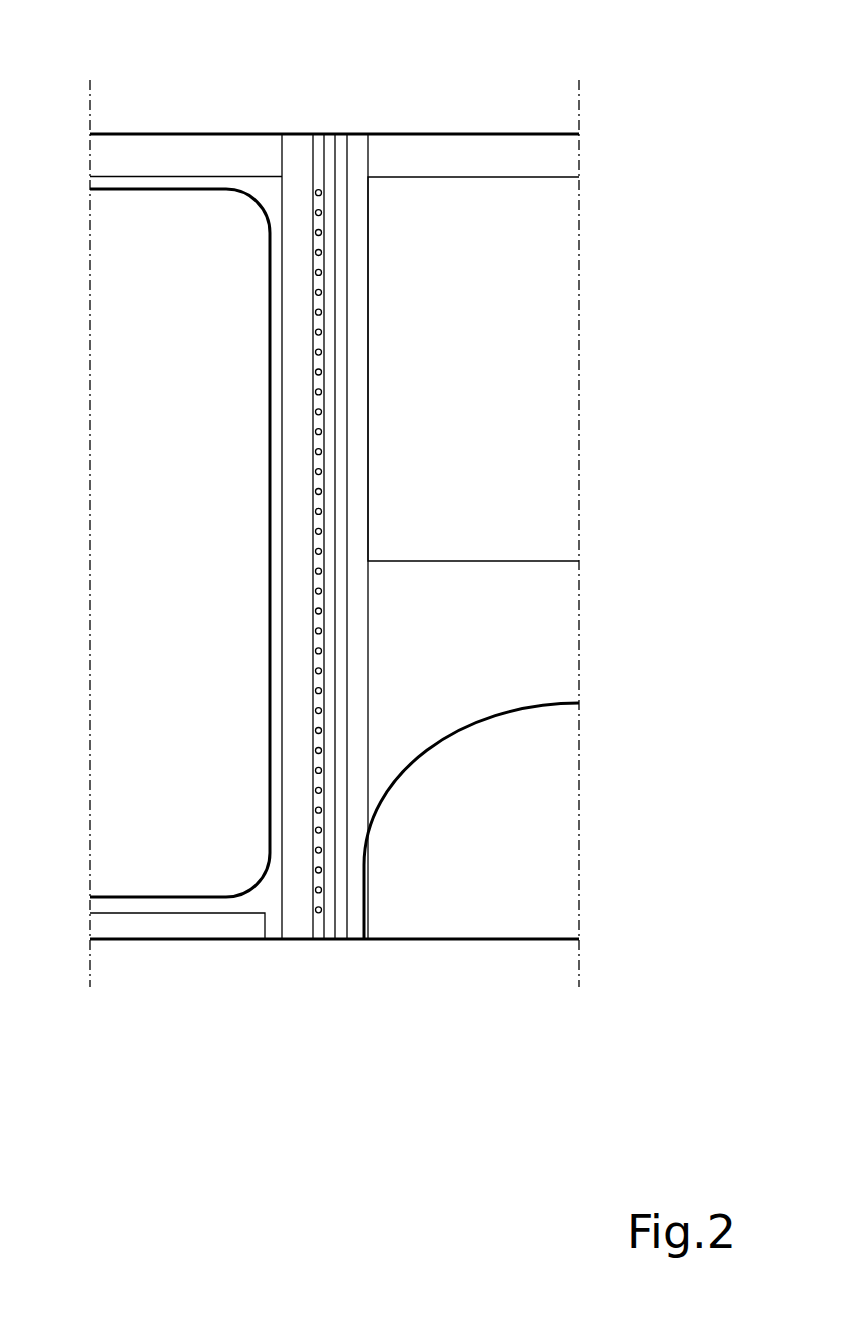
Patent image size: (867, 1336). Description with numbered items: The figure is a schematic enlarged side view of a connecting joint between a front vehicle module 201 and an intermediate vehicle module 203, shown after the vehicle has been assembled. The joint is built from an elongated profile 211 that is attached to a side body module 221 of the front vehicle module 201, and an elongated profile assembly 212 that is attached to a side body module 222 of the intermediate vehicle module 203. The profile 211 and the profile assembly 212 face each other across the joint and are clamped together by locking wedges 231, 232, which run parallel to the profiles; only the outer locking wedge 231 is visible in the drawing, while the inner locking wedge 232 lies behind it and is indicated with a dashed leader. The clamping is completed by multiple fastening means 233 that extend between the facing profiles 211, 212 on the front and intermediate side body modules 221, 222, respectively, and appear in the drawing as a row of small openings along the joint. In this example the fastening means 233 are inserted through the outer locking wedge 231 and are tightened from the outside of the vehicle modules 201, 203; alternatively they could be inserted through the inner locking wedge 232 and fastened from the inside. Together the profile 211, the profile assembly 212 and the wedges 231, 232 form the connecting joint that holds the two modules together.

The front vehicle module 201 is at (368, 128).
The intermediate vehicle module 203 is at (193, 130).
The elongated profile 211 is at (334, 945).
The elongated profile assembly 212 is at (293, 945).
The side body module 221 is at (489, 445).
The side body module 222 is at (133, 445).
The outer locking wedge 231 is at (318, 928).
The inner locking wedge 232 is at (331, 978).
The fastening means 233 is at (321, 871).